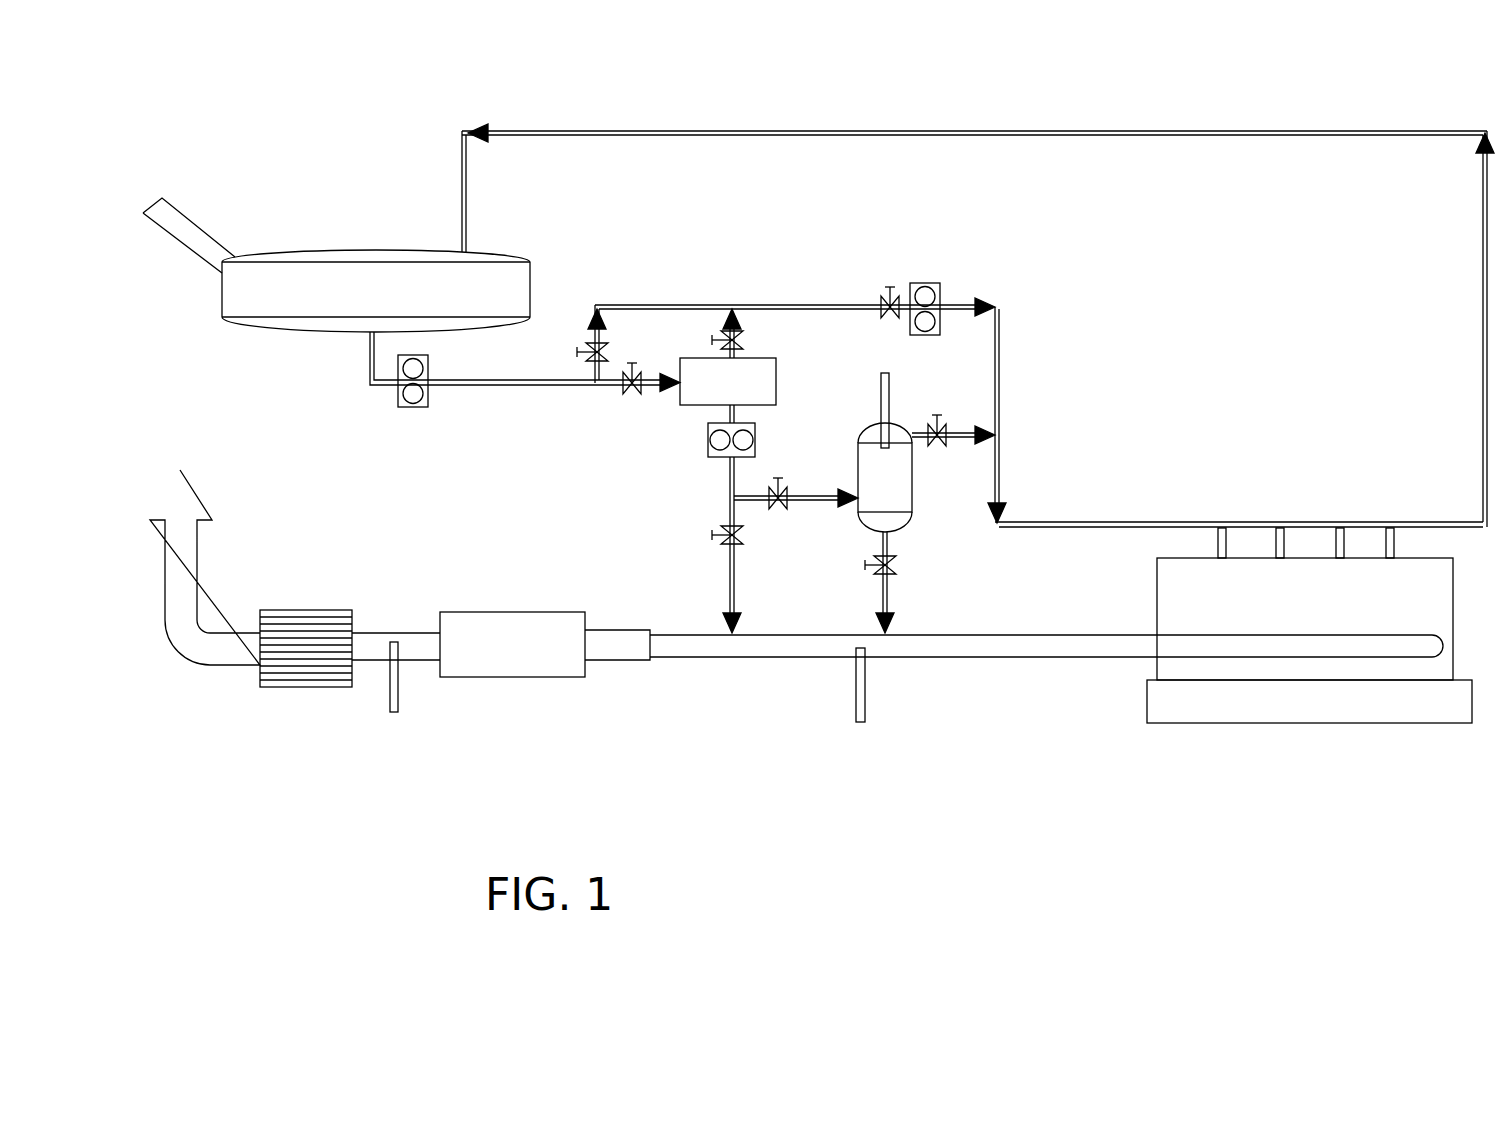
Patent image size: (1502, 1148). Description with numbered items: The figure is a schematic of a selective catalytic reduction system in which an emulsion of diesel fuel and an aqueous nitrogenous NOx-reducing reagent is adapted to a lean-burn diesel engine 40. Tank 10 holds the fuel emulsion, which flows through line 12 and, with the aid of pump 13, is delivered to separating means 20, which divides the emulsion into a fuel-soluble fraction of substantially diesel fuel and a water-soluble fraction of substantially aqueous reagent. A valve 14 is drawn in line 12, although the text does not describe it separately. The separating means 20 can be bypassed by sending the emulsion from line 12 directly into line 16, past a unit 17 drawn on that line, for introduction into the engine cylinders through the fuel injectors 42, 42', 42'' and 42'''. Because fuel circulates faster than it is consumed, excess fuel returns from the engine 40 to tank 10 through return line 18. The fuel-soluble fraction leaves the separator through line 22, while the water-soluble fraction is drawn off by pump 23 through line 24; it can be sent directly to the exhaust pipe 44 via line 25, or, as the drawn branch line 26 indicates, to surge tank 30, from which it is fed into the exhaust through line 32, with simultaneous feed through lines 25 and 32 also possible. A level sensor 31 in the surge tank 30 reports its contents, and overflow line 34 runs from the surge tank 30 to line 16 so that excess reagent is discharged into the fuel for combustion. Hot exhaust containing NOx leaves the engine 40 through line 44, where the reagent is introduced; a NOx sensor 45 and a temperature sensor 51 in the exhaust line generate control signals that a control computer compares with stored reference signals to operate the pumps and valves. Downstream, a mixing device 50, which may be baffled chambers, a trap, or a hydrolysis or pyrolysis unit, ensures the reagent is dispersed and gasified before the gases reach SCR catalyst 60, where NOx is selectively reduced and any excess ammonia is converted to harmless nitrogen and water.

The tank 10 is at (369, 305).
The line 12 is at (518, 385).
The pump 13 is at (413, 407).
The fuel supply valve 14 is at (650, 383).
The line 16 is at (648, 307).
The bypass flow sensor 17 is at (923, 283).
The return line 18 is at (778, 135).
The separating means 20 is at (711, 397).
The line 22 is at (738, 325).
The pump 23 is at (708, 435).
The line 24 is at (727, 477).
The line 25 is at (730, 603).
The branch line 26 is at (748, 500).
The surge tank 30 is at (868, 495).
The level sensor 31 is at (888, 385).
The line 32 is at (885, 548).
The overflow line 34 is at (953, 430).
The diesel engine 40 is at (1298, 615).
The fuel injector 42 is at (1235, 452).
The fuel injector 42' is at (1225, 510).
The fuel injector 42'' is at (1288, 487).
The fuel injector 42''' is at (1353, 465).
The exhaust pipe 44 is at (1008, 642).
The NOx sensor 45 is at (860, 722).
The mixing device 50 is at (491, 657).
The temperature sensor 51 is at (394, 712).
The SCR catalyst 60 is at (330, 687).